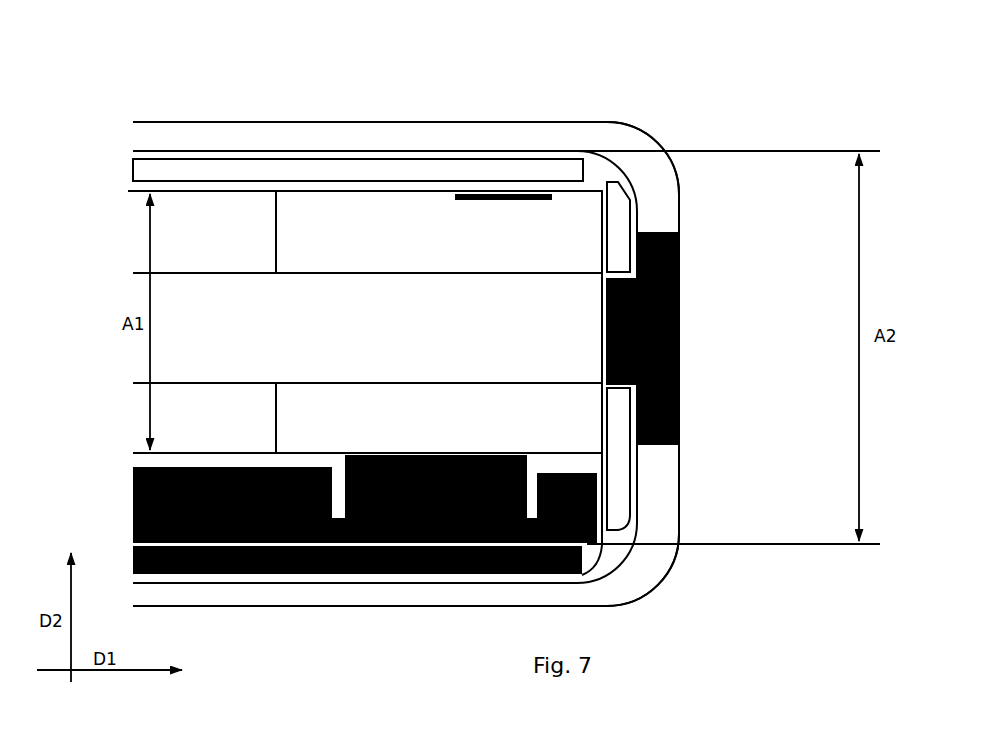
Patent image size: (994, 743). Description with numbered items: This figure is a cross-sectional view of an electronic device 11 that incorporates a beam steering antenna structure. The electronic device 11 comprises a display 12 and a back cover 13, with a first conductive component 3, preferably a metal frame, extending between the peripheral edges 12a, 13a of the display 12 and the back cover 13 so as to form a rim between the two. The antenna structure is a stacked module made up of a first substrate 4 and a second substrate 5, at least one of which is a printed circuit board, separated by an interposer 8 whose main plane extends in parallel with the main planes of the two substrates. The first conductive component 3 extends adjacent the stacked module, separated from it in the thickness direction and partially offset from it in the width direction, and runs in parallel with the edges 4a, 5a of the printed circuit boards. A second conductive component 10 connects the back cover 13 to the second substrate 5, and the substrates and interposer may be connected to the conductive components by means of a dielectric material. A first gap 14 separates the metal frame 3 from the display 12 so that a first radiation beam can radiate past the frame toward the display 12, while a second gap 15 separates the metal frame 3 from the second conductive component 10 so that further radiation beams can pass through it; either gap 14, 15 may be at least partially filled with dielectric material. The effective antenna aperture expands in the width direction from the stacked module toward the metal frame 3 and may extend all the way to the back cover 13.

The electronic device 11 is at (552, 82).
The second conductive component 10 is at (370, 134).
The back cover 13 is at (406, 364).
The second gap 15 is at (601, 170).
The peripheral edge of the back cover 13a is at (658, 208).
The second substrate 5 is at (320, 243).
The edge of the second substrate 5a is at (598, 228).
The interposer 8 is at (418, 338).
The first substrate 4 is at (312, 424).
The edge of the first substrate 4a is at (598, 423).
The first conductive component 3 is at (681, 346).
The display 12 is at (127, 556).
The peripheral edge of the display 12a is at (588, 562).
The first gap 14 is at (603, 549).